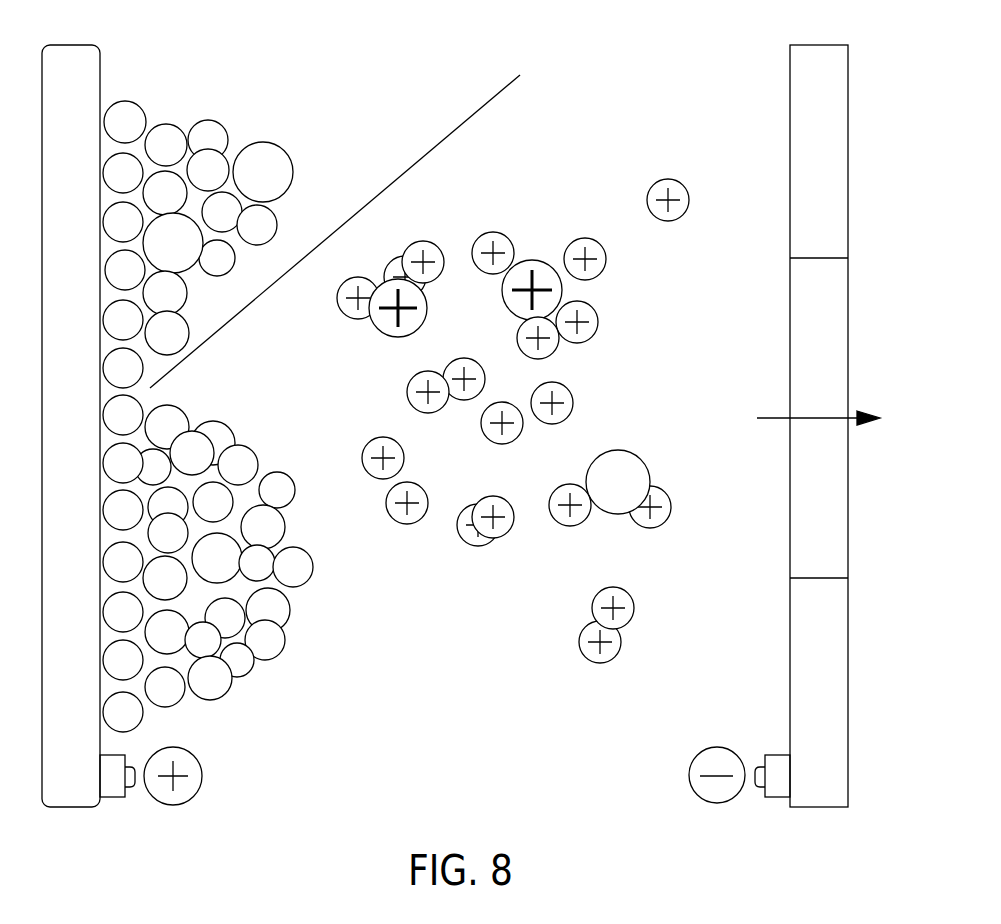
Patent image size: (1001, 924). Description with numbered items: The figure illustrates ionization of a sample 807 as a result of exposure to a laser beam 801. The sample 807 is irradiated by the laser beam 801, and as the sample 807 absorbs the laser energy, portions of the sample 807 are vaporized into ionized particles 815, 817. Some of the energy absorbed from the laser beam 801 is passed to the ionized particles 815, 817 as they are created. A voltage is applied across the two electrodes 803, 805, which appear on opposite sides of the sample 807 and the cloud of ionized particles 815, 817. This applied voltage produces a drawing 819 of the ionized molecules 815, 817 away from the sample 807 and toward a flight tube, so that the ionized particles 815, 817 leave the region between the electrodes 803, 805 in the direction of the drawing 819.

The laser beam 801 is at (430, 152).
The electrode 803 is at (203, 775).
The electrode 805 is at (689, 775).
The sample 807 is at (237, 680).
The ionized particle 815 is at (530, 262).
The ionized particle 817 is at (560, 527).
The drawing of ionized molecules 819 is at (777, 417).